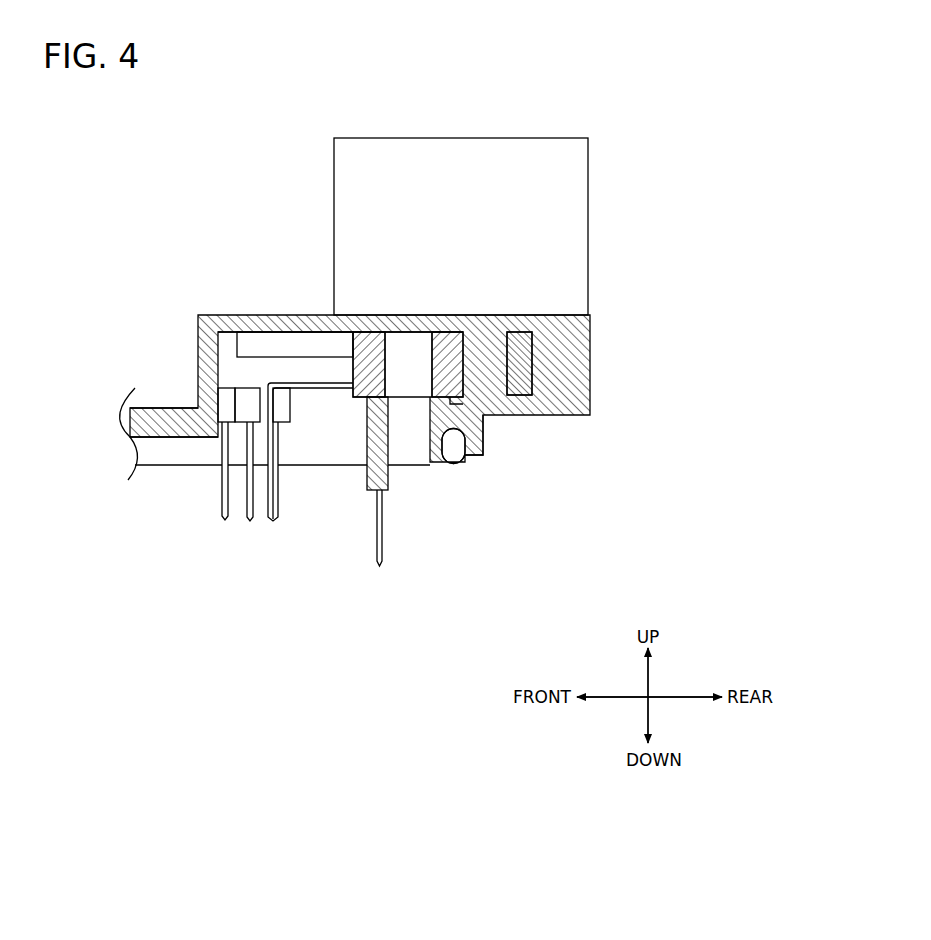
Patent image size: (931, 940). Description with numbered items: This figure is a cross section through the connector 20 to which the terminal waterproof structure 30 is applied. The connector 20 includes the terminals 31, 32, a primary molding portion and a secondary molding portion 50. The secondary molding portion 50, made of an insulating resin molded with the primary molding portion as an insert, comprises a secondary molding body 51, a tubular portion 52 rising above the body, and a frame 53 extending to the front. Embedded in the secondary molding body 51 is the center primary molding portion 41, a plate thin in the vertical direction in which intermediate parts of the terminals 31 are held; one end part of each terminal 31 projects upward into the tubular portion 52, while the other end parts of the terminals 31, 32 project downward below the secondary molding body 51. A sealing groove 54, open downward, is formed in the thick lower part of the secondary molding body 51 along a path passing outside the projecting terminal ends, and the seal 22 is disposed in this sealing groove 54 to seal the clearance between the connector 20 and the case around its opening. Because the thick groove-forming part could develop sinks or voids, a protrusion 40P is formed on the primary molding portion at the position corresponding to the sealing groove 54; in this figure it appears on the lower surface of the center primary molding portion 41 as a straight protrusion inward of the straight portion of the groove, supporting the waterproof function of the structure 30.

The connector 20 is at (406, 359).
The seal 22 is at (465, 465).
The terminal waterproof structure 30 is at (378, 483).
The terminals 31 is at (272, 521).
The terminals 32 is at (250, 522).
The protrusion 40P is at (460, 403).
The center primary molding portion 41 is at (465, 340).
The secondary molding portion 50 is at (393, 411).
The secondary molding body 51 is at (592, 398).
The tubular portion 52 is at (577, 175).
The frame 53 is at (172, 407).
The sealing groove 54 is at (487, 447).